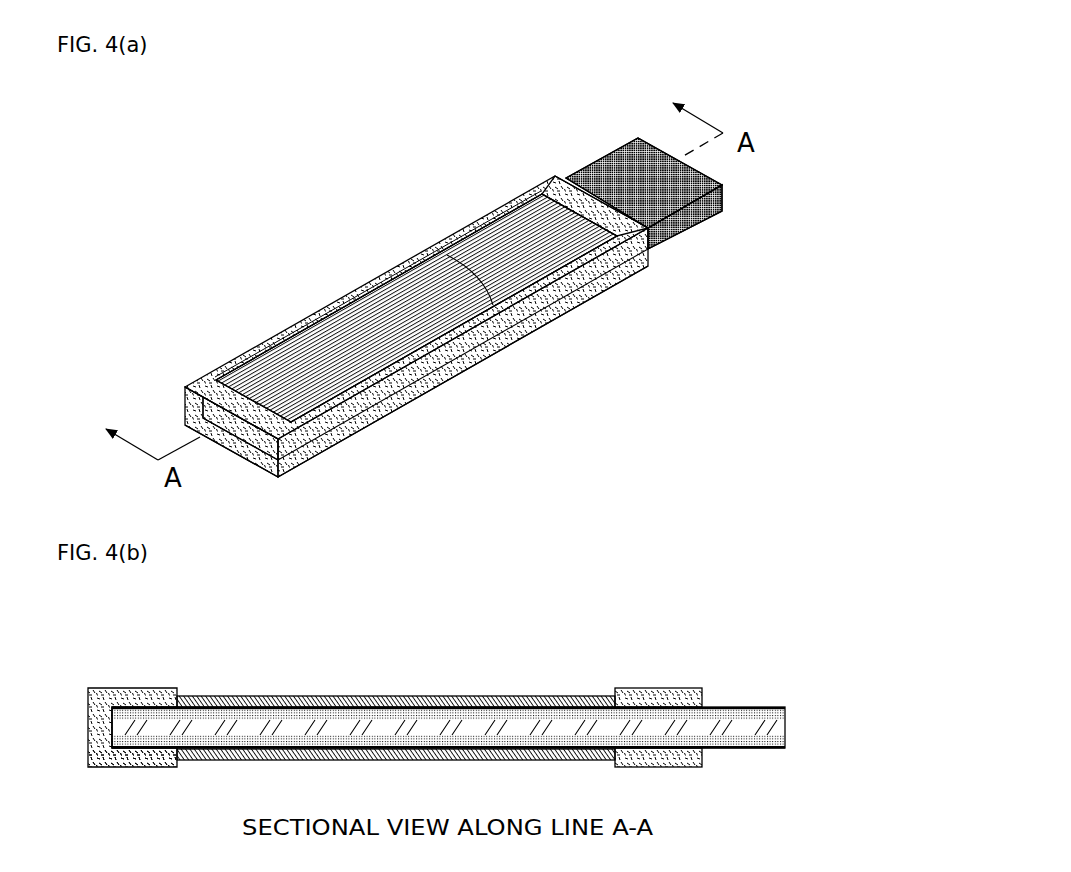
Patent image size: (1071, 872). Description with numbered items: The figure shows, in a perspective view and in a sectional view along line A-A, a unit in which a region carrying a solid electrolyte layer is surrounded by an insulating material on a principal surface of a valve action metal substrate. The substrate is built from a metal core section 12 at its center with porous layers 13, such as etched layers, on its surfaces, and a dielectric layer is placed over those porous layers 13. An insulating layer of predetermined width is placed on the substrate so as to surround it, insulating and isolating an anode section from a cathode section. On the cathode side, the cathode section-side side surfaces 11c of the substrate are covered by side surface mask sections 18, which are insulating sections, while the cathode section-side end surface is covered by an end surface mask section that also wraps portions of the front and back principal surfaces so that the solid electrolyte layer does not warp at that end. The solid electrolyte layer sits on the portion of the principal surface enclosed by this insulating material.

The cathode section-side side surfaces 11c is at (472, 360).
The metal core section 12 is at (785, 727).
The porous layers 13 is at (785, 711).
The side surface mask sections 18 is at (425, 254).